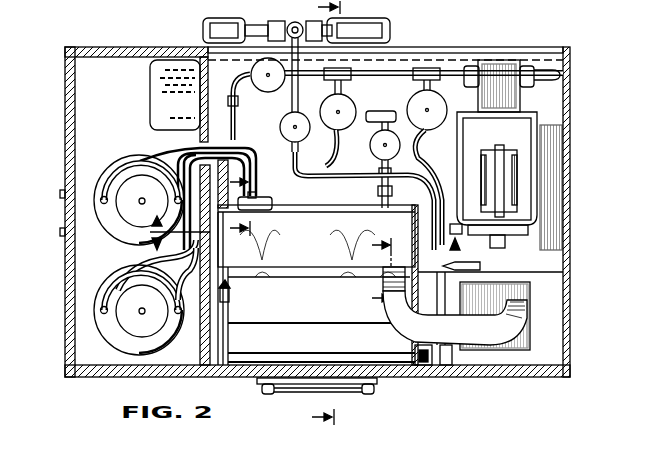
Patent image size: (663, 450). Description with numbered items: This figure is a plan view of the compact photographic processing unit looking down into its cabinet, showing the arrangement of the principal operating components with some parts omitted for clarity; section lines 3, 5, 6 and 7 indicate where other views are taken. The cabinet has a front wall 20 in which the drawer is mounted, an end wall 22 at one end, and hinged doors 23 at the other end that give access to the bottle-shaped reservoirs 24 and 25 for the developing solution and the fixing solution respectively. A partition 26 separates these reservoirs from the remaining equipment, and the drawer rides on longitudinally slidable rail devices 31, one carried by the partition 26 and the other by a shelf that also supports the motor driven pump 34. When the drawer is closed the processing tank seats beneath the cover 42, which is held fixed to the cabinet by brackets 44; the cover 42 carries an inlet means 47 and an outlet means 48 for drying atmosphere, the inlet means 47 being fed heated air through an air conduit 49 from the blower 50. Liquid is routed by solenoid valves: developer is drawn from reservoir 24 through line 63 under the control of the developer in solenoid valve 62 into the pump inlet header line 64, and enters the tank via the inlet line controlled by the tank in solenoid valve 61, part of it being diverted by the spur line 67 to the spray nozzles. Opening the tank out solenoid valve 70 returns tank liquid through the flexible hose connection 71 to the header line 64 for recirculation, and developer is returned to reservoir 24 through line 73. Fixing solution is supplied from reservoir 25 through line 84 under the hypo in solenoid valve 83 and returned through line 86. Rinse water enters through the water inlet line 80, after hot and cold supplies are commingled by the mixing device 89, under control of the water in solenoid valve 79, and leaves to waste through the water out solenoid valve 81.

The front wall 20 is at (540, 377).
The end wall 22 is at (570, 195).
The hinged doors 23 is at (62, 200).
The reservoir 24 is at (117, 152).
The reservoir 25 is at (95, 327).
The partition 26 is at (190, 50).
The longitudinally slidable rail devices 31 is at (210, 351).
The motor driven pump 34 is at (540, 140).
The cover 42 is at (326, 255).
The brackets 44 is at (468, 262).
The inlet means 47 is at (380, 283).
The outlet means 48 is at (262, 197).
The air conduit 49 is at (450, 370).
The blower 50 is at (535, 292).
The "tank in" solenoid valve 61 is at (374, 135).
The "developer in" solenoid valve 62 is at (326, 100).
The line 63 is at (340, 142).
The pump inlet header line 64 is at (412, 66).
The spur line 67 is at (418, 168).
The "tank out" solenoid valve 70 is at (272, 90).
The flexible hose connection 71 is at (239, 113).
The line 73 is at (175, 148).
The "water in" solenoid valve 79 is at (285, 137).
The water inlet line 80 is at (330, 179).
The "water out" solenoid valve 81 is at (412, 62).
The "hypo in" solenoid valve 83 is at (455, 62).
The line 84 is at (430, 150).
The line 86 is at (115, 267).
The mixing device 89 is at (287, 24).
The section line 3 is at (333, 214).
The section line 5 is at (305, 232).
The section line 6 is at (388, 273).
The section line 7 is at (246, 206).